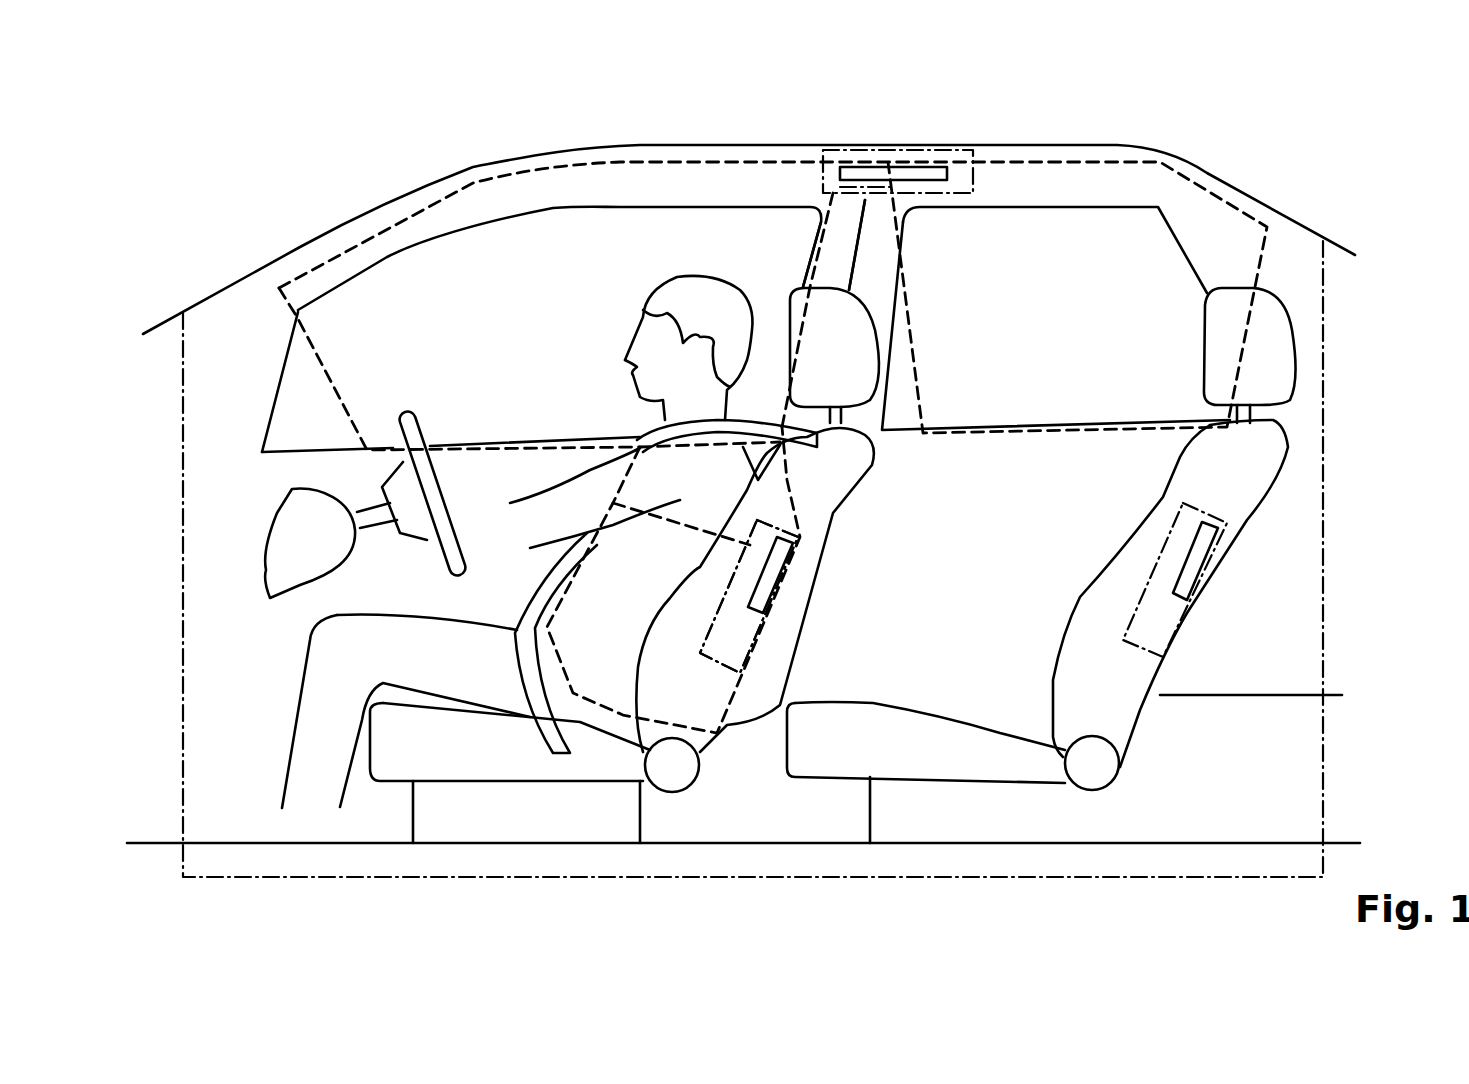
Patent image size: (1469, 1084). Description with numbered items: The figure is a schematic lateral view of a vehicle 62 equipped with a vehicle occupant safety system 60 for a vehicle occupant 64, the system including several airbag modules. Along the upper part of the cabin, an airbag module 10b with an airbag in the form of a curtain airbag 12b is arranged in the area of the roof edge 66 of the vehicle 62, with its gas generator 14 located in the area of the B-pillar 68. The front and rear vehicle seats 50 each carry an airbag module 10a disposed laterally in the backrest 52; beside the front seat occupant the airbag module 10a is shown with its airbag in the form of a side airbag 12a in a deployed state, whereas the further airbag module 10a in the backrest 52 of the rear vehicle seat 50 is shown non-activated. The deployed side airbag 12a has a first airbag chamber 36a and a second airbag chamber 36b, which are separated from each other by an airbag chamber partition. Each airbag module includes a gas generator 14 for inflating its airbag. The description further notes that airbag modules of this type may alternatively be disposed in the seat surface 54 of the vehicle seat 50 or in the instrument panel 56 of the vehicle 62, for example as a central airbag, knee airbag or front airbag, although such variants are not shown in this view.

The airbag module 10a is at (1205, 582).
The airbag module 10b is at (967, 140).
The side airbag 12a is at (627, 723).
The curtain airbag 12b is at (1210, 177).
The gas generator 14 is at (923, 170).
The first airbag chamber 36a is at (539, 307).
The second airbag chamber 36b is at (1072, 307).
The vehicle seat 50 is at (874, 606).
The backrest 52 is at (1250, 495).
The seat surface 54 is at (450, 760).
The instrument panel 56 is at (295, 533).
The vehicle occupant safety system 60 is at (360, 197).
The vehicle 62 is at (260, 227).
The vehicle occupant 64 is at (693, 293).
The roof edge 66 is at (468, 165).
The B-pillar 68 is at (847, 220).